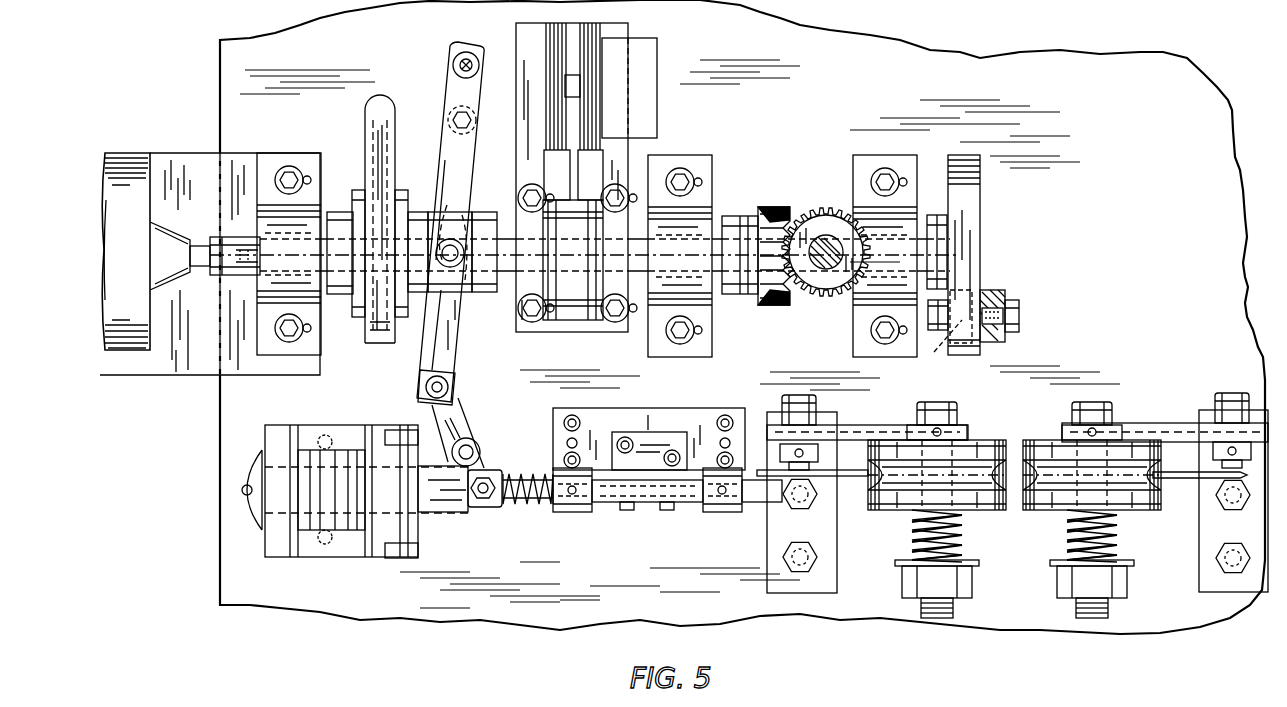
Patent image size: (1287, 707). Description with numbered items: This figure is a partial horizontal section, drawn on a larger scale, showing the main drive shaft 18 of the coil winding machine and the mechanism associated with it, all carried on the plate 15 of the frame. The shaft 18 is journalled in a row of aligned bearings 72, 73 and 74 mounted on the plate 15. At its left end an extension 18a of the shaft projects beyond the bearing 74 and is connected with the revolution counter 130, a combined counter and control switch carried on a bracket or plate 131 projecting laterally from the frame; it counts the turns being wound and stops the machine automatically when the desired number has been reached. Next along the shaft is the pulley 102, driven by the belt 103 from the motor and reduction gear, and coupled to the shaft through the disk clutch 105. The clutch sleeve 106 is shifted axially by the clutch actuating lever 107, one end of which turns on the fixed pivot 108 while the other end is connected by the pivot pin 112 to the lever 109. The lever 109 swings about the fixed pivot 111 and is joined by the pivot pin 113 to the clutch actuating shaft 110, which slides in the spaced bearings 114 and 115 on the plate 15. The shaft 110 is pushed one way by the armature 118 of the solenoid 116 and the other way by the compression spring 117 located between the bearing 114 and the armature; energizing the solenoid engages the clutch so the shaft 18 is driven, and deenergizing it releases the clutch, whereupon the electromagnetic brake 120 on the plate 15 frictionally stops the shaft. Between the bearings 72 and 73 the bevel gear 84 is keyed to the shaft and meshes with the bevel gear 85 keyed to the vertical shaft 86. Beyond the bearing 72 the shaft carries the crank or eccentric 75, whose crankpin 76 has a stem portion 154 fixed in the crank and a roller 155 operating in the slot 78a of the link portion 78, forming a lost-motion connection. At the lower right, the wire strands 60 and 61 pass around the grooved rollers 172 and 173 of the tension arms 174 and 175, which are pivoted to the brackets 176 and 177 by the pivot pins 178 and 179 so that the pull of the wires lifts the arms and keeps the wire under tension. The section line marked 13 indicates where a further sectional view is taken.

The plate 15 is at (925, 58).
The revolution counter 130 is at (138, 160).
The bracket or plate 131 is at (172, 160).
The extension of the main shaft 18a is at (240, 238).
The main drive shaft 18 is at (505, 245).
The bearing 74 is at (272, 288).
The pulley 102 is at (358, 186).
The belt 103 is at (372, 128).
The disk clutch 105 is at (410, 192).
The clutch sleeve 106 is at (474, 300).
The clutch actuating lever 107 is at (425, 352).
The fixed pivot 108 is at (458, 54).
The pivot pin 112 is at (426, 388).
The lever 109 is at (478, 404).
The fixed pivot 111 is at (474, 444).
The clutch actuating shaft 110 is at (515, 463).
The pivot pin 113 is at (484, 506).
The armature 118 is at (430, 514).
The compression spring 117 is at (530, 508).
The bearing 114 is at (558, 514).
The bearing 115 is at (712, 514).
The solenoid 116 is at (340, 556).
The electromagnetic brake 120 is at (634, 148).
The bearing 73 is at (704, 212).
The bevel gear 84 is at (774, 216).
The bevel gear 85 is at (803, 210).
The vertical shaft 86 is at (812, 270).
The bearing 72 is at (870, 207).
The crank or eccentric 75 is at (972, 200).
The stem portion 154 is at (947, 336).
The roller 155 is at (986, 344).
The link portion 78 is at (990, 290).
The crankpin 76 is at (1008, 300).
The slot 78a is at (1008, 340).
The bracket 177 is at (770, 455).
The pivot pin 179 is at (806, 386).
The tension arm 175 is at (866, 408).
The grooved roller 173 is at (897, 516).
The grooved roller 172 is at (1141, 510).
The strand 61 is at (860, 478).
The tension arm 174 is at (1132, 430).
The bracket 176 is at (1210, 542).
The pivot pin 178 is at (1224, 392).
The strand 60 is at (1194, 480).
The section line 13 is at (912, 518).